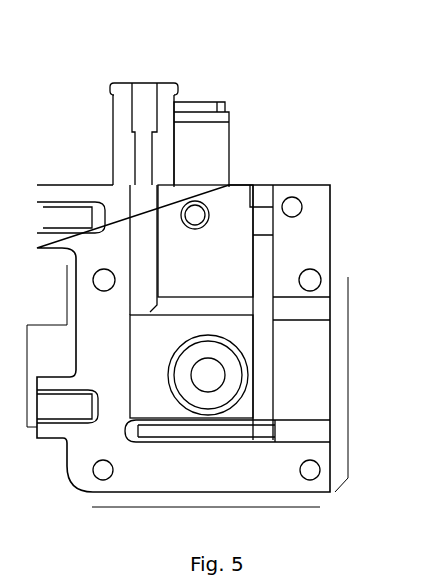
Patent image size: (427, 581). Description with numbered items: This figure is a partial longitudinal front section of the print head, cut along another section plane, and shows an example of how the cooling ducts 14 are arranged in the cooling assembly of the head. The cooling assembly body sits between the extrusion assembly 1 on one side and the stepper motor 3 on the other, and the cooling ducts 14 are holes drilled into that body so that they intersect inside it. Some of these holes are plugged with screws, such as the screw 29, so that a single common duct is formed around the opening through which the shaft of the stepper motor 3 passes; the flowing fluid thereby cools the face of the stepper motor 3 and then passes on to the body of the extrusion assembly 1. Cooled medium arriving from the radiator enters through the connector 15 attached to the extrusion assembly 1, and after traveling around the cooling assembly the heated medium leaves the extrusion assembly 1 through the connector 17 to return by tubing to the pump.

The extrusion assembly 1 is at (340, 201).
The stepper motor 3 is at (355, 274).
The cooling ducts 14 is at (259, 288).
The connector 15 is at (230, 90).
The connector 17 is at (112, 72).
The screw 29 is at (345, 449).